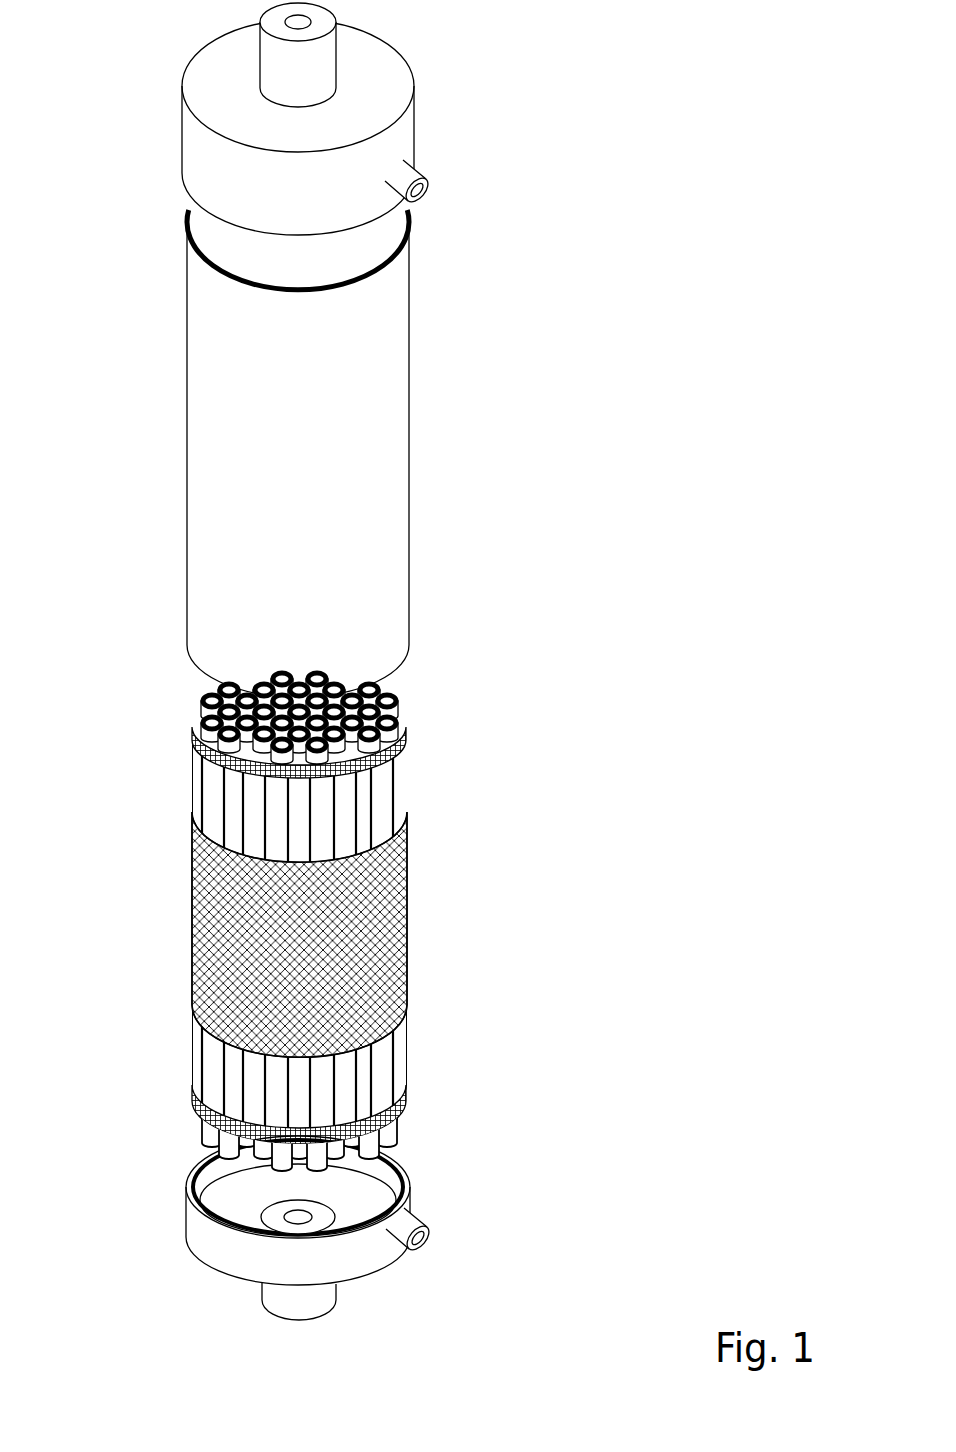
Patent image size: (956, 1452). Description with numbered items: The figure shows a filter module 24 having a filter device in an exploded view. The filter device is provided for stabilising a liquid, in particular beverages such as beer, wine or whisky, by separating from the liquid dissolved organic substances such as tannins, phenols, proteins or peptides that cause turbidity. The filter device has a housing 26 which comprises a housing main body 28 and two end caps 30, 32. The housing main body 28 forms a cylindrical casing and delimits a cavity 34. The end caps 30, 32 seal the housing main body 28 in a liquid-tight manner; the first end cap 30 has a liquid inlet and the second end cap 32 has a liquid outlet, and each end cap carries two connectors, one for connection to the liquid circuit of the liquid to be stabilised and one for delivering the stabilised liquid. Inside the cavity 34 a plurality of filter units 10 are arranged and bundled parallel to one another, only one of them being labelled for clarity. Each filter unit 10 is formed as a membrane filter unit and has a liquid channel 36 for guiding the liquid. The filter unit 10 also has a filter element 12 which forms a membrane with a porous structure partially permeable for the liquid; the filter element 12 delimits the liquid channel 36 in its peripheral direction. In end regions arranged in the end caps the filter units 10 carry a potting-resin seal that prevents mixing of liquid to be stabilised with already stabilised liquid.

The filter unit 10 is at (371, 911).
The filter element 12 is at (407, 763).
The filter module 24 is at (390, 661).
The housing 26 is at (310, 661).
The housing main body 28 is at (359, 453).
The first end cap 30 is at (400, 133).
The second end cap 32 is at (432, 1245).
The cavity 34 is at (328, 447).
The liquid channel 36 is at (400, 680).